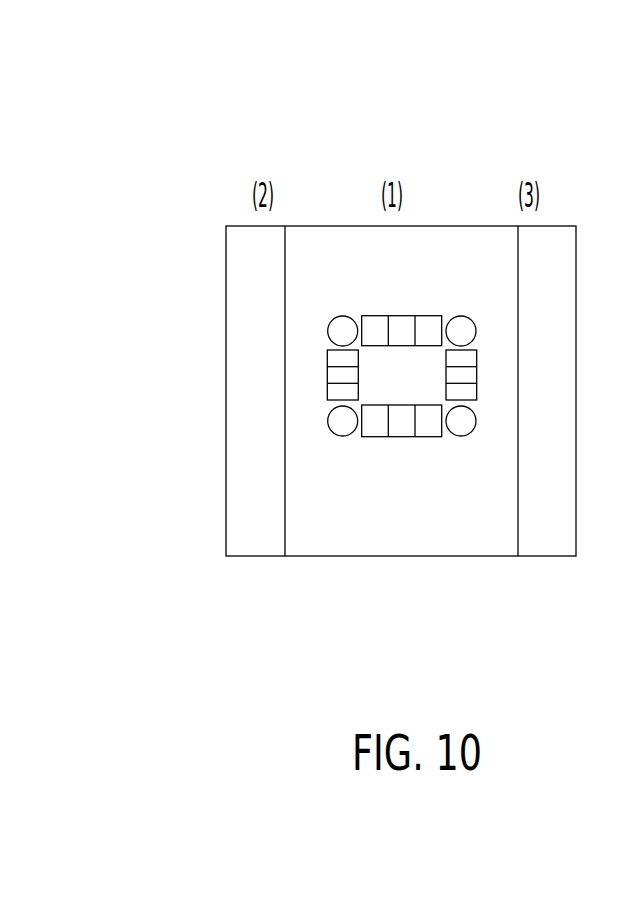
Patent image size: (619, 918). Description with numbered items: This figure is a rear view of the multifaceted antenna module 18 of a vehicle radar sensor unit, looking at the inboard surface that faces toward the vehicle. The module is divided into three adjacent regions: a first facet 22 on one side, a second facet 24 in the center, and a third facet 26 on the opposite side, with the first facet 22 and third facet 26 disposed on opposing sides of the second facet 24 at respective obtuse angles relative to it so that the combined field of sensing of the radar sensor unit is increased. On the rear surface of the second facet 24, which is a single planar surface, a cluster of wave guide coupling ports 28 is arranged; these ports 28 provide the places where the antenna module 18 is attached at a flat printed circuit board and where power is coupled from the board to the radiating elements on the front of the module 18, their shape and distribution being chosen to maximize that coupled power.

The antenna module 18 is at (228, 120).
The first facet 22 is at (242, 536).
The second facet 24 is at (472, 537).
The third facet 26 is at (542, 537).
The wave guide coupling ports 28 is at (379, 438).